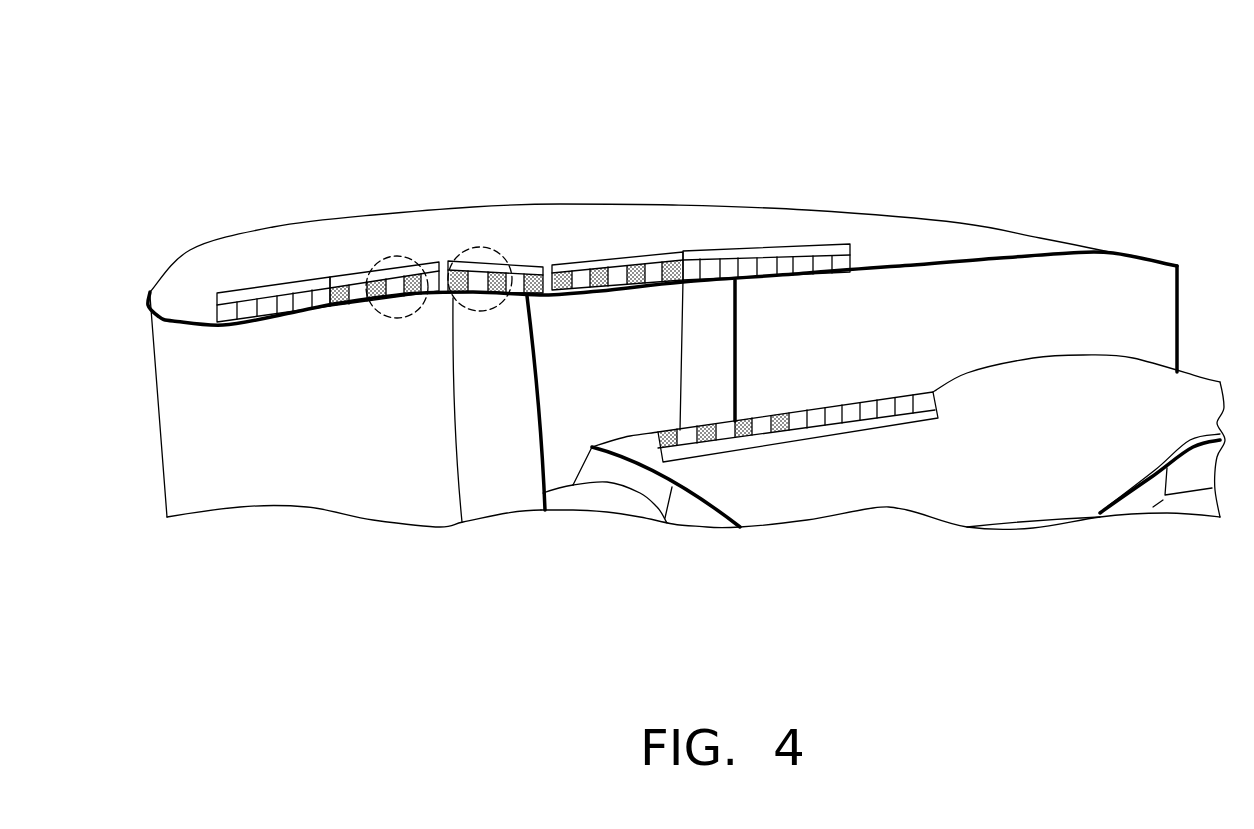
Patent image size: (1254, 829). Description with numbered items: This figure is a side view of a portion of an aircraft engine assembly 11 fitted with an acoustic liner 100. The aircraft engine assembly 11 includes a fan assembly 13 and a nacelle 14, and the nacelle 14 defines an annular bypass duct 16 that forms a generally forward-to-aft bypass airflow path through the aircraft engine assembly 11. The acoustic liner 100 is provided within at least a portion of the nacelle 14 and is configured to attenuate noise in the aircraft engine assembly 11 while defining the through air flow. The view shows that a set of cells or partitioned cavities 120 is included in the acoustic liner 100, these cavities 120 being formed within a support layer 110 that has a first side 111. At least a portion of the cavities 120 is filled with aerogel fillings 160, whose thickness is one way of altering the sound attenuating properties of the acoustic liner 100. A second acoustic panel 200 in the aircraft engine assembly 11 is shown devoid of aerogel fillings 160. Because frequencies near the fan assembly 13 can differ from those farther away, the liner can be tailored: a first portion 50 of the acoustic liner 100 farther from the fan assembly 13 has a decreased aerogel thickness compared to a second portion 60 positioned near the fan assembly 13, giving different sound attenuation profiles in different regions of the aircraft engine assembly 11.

The aircraft engine assembly 11 is at (198, 97).
The fan assembly 13 is at (485, 435).
The nacelle 14 is at (393, 210).
The annular bypass duct 16 is at (1100, 302).
The first portion 50 is at (390, 313).
The second portion 60 is at (457, 303).
The acoustic liner 100 is at (393, 267).
The support layer 110 is at (857, 266).
The first side 111 is at (858, 250).
The partitioned cavities 120 is at (933, 397).
The aerogel fillings 160 is at (336, 283).
The second acoustic panel 200 is at (790, 225).